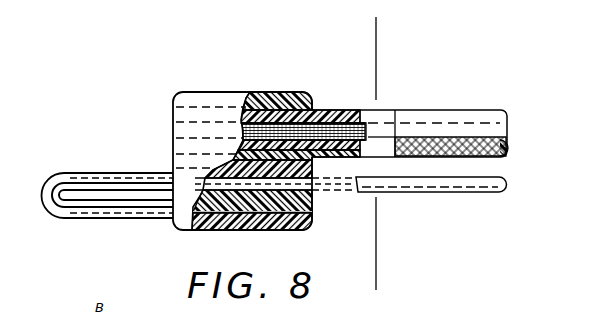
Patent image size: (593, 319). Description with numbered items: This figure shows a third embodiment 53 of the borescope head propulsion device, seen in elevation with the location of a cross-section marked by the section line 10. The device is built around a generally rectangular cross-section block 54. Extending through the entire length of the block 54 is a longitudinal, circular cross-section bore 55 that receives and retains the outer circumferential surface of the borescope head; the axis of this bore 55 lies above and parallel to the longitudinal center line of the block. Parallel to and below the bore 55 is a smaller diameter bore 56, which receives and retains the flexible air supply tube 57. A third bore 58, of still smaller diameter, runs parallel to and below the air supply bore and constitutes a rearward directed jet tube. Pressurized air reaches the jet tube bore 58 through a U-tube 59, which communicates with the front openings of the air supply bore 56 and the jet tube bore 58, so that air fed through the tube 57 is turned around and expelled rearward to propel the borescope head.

The section line 10- 10 is at (384, 33).
The third embodiment 53 is at (340, 139).
The block 54 is at (249, 90).
The bore 55 is at (318, 108).
The bore 56 is at (312, 196).
The flexible air supply tube 57 is at (452, 193).
The bore 58 is at (312, 223).
The U-tube 59 is at (97, 219).